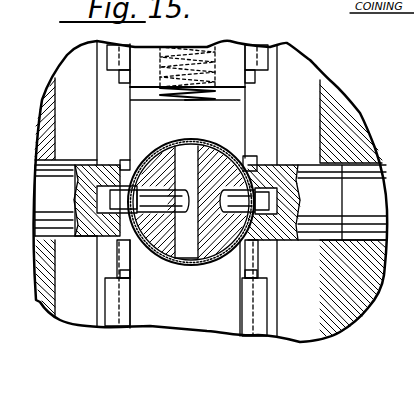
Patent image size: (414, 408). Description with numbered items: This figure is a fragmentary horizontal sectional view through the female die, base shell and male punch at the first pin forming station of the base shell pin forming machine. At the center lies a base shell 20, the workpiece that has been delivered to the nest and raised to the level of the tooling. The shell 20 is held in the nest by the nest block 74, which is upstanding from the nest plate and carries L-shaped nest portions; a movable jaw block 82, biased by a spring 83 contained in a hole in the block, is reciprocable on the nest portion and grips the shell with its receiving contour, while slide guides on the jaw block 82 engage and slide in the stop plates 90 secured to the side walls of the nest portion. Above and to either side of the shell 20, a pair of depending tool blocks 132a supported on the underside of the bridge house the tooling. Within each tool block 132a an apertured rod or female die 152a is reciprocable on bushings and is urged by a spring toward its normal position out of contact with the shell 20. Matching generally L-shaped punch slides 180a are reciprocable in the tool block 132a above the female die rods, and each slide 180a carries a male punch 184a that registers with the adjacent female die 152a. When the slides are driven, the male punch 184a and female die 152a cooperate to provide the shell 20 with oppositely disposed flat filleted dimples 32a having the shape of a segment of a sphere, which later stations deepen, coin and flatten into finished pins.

The tool block 132a is at (42, 107).
The female die 152a is at (98, 262).
The nest block 74 is at (278, 88).
The movable jaw block 82 is at (222, 53).
The stop plate 90 is at (268, 48).
The base shell 20 is at (240, 152).
The spring 83 is at (160, 92).
The dimple 32a is at (272, 200).
The punch slide 180a is at (181, 149).
The male punch 184a is at (190, 266).